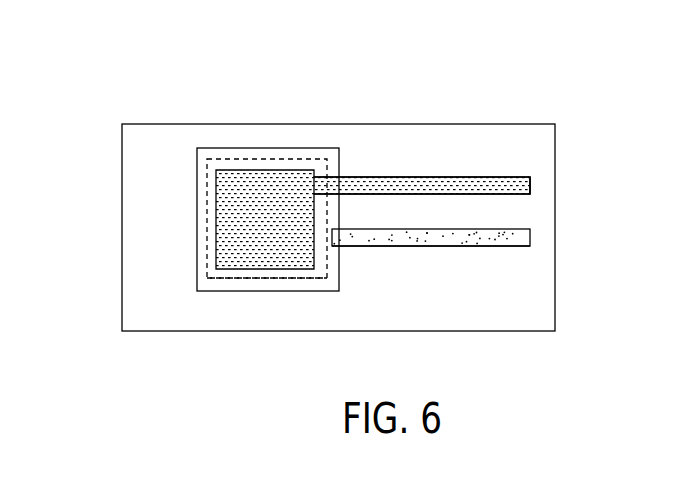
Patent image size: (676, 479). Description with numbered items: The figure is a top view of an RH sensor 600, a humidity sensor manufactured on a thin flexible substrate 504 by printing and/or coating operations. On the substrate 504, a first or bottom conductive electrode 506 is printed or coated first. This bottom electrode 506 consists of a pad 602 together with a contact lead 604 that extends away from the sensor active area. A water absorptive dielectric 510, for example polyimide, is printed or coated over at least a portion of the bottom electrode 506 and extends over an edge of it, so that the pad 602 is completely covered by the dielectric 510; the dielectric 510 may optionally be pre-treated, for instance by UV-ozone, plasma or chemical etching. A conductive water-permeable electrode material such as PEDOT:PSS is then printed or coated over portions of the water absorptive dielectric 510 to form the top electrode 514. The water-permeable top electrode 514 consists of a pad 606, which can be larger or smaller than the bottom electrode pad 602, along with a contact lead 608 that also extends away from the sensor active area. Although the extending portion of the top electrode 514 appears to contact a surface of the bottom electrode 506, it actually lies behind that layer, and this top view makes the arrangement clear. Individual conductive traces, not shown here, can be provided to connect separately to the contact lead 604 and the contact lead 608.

The RH sensor 600 is at (199, 78).
The substrate 504 is at (110, 152).
The water absorptive dielectric 510 is at (189, 201).
The pad 602 is at (315, 158).
The pad 606 is at (243, 173).
The top electrode 514 is at (407, 177).
The contact lead 608 is at (510, 178).
The contact lead 604 is at (487, 240).
The first or bottom conductive electrode 506 is at (300, 292).